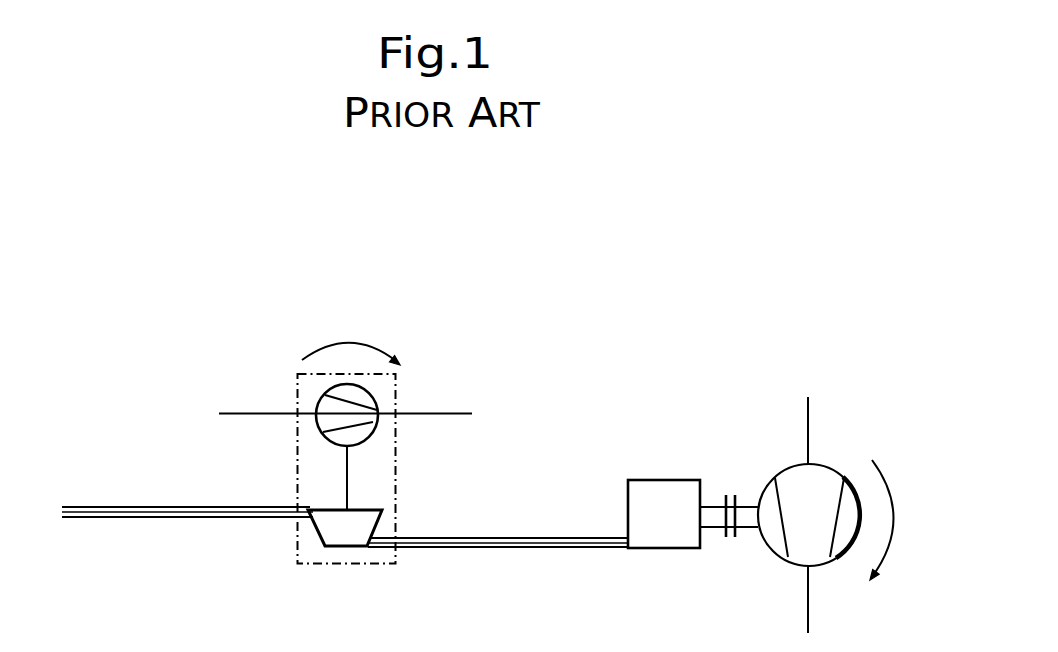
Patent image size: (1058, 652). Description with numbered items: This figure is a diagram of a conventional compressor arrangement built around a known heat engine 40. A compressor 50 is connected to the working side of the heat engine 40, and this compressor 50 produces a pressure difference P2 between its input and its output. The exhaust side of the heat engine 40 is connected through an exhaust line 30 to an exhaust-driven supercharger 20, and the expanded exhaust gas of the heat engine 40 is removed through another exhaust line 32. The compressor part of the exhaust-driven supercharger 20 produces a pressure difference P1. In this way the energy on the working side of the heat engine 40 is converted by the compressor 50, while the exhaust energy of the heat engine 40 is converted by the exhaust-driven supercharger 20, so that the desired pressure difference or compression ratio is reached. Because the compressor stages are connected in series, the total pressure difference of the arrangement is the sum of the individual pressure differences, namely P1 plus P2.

The exhaust-driven supercharger 20 is at (340, 547).
The exhaust line 30 is at (502, 537).
The exhaust line 32 is at (155, 505).
The heat engine 40 is at (653, 478).
The compressor 50 is at (780, 470).
The pressure difference P1 is at (343, 342).
The pressure difference P2 is at (893, 505).